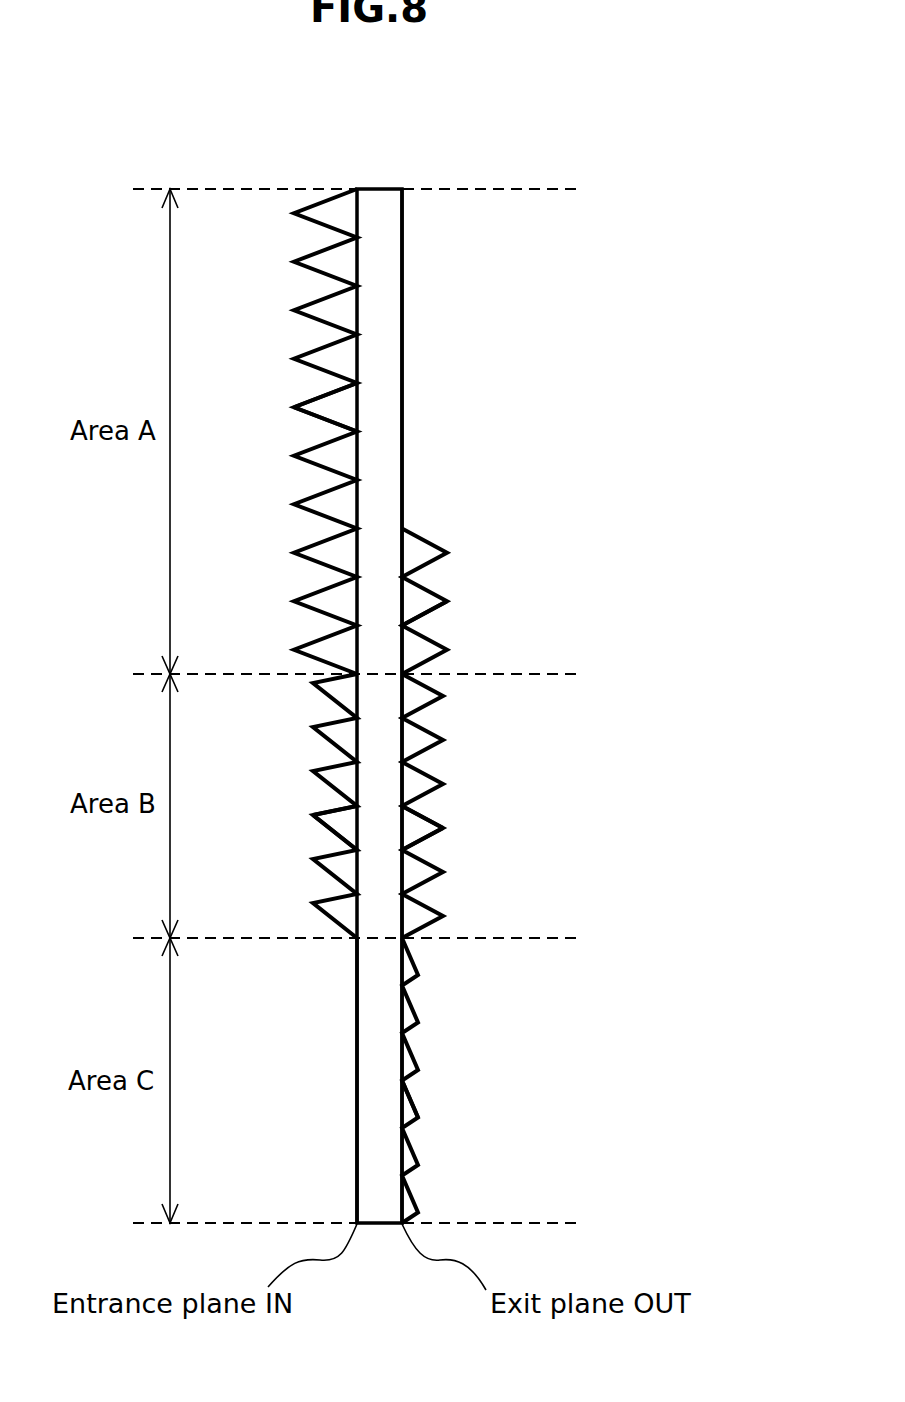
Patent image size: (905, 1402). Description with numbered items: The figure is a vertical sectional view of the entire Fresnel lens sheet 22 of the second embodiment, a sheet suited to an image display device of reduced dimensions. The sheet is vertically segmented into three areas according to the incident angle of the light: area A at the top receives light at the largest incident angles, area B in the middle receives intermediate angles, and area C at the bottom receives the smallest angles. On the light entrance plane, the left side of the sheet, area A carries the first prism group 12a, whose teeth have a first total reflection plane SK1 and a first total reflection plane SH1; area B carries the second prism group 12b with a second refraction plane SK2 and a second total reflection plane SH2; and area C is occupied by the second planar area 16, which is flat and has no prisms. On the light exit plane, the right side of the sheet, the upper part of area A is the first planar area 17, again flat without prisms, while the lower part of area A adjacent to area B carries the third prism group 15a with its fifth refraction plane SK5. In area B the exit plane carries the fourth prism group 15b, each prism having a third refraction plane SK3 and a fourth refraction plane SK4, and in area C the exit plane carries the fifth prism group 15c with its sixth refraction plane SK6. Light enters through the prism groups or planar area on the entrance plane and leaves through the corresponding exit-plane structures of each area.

The Fresnel lens sheet 22 is at (374, 211).
The first planar area 17 is at (403, 405).
The second planar area 16 is at (355, 1048).
The first prism group 12a is at (323, 268).
The first total reflection plane SH1 is at (323, 398).
The first total reflection plane SK1 is at (322, 430).
The third prism group 15a is at (418, 553).
The fifth refraction plane SK5 is at (433, 613).
The second prism group 12b is at (340, 744).
The second total reflection plane SH2 is at (330, 809).
The second refraction plane SK2 is at (327, 832).
The fourth prism group 15b is at (413, 738).
The third refraction plane SK3 is at (420, 815).
The fourth refraction plane SK4 is at (430, 840).
The fifth prism group 15c is at (405, 1013).
The sixth refraction plane SK6 is at (412, 1102).